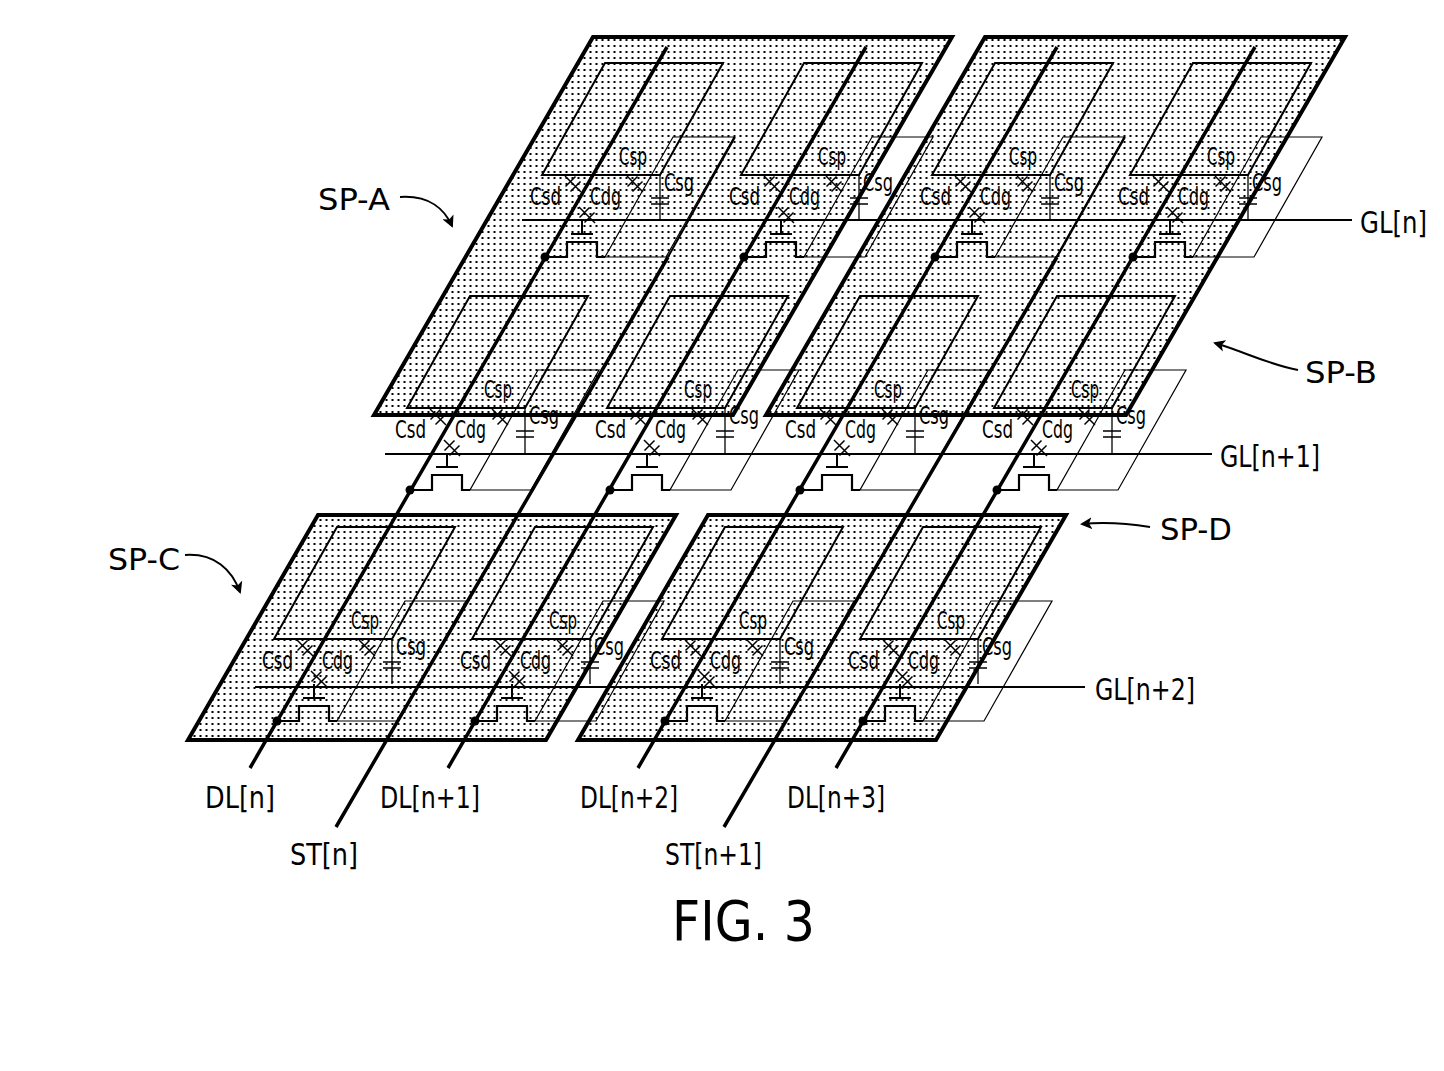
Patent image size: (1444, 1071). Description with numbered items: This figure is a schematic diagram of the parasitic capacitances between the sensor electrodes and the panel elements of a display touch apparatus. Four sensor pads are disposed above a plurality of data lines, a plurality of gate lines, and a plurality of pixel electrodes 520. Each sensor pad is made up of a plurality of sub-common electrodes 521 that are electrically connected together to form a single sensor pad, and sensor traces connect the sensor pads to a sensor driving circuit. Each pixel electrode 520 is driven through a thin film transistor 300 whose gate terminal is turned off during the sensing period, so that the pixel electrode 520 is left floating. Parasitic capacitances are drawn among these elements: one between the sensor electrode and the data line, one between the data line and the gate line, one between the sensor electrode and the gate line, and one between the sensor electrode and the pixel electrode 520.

The sub-common electrode 521 is at (1298, 77).
The pixel electrode 520 is at (1307, 167).
The thin film transistor 300 is at (1175, 252).